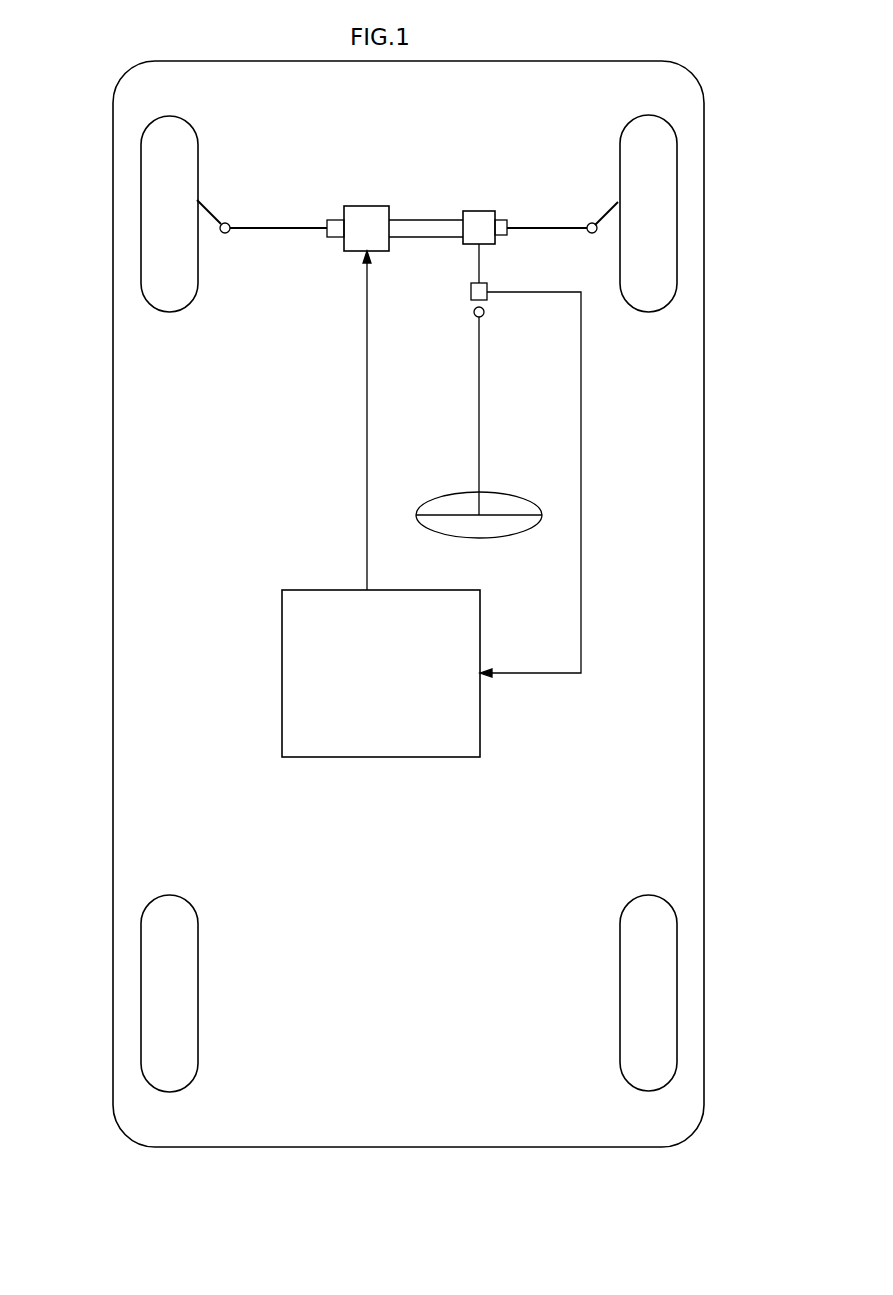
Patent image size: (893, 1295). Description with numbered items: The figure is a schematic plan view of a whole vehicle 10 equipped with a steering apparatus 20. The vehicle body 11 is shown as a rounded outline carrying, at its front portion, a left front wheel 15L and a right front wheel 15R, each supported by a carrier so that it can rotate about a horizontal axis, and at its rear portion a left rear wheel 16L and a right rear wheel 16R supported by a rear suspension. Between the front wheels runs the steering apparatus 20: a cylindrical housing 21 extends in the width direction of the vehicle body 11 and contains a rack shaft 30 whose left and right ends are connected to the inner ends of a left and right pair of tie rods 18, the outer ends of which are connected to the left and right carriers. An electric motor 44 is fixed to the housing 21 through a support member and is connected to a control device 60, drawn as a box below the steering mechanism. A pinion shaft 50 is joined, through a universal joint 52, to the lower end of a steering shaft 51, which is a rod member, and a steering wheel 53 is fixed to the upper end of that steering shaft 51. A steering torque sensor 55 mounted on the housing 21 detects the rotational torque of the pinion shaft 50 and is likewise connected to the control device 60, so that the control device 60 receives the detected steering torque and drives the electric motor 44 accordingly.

The vehicle 10 is at (414, 604).
The vehicle body 11 is at (704, 497).
The front wheel 15L is at (141, 226).
The front wheel 15R is at (677, 225).
The left rear wheel 16L is at (141, 1000).
The right rear wheel 16R is at (677, 1003).
The tie rod 18 is at (212, 208).
The steering apparatus 20 is at (407, 349).
The cylindrical housing 21 is at (340, 238).
The rack shaft 30 is at (280, 226).
The electric motor 44 is at (368, 206).
The pinion shaft 50 is at (480, 258).
The steering shaft 51 is at (478, 397).
The universal joint 52 is at (475, 313).
The steering wheel 53 is at (462, 540).
The steering torque sensor 55 is at (488, 298).
The control device 60 is at (395, 757).